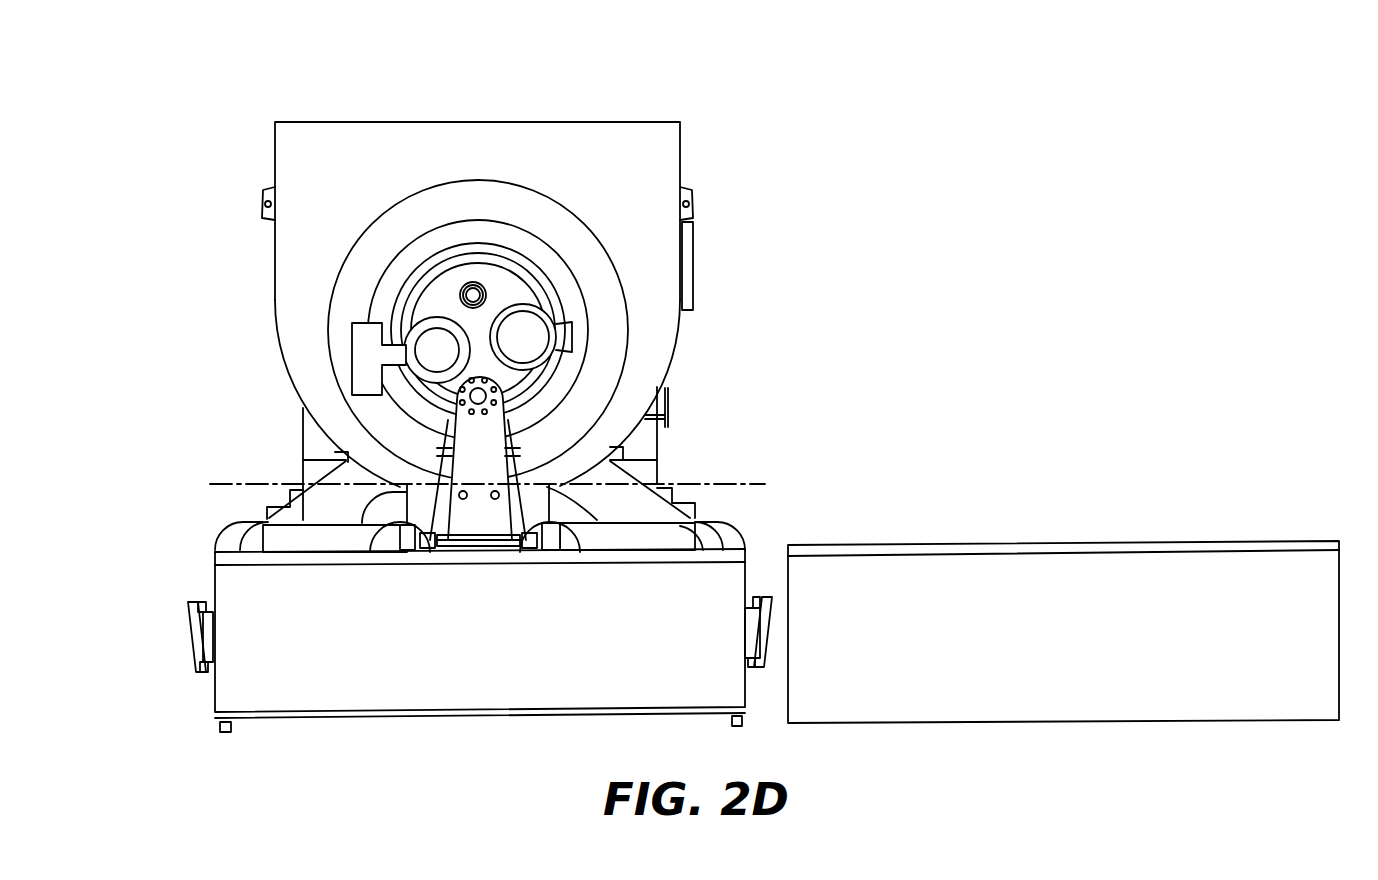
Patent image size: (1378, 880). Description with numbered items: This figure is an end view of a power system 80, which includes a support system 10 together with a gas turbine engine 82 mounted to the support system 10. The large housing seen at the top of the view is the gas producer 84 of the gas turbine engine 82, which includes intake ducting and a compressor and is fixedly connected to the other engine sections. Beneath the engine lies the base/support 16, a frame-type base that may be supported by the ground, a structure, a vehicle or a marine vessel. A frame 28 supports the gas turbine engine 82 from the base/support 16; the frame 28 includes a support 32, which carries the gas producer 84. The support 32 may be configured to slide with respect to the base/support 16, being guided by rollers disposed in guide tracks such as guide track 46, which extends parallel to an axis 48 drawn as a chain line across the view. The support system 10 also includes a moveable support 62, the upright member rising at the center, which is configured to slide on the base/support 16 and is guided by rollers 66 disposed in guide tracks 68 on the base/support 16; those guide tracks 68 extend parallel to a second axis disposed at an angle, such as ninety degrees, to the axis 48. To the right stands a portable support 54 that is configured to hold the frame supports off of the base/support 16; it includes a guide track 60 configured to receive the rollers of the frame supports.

The support system 10 is at (438, 728).
The base/support 16 is at (365, 690).
The frame 28 is at (237, 539).
The support 32 is at (317, 542).
The guide track 46 is at (747, 548).
The axis 48 is at (723, 482).
The portable support 54 is at (1318, 698).
The guide track 60 is at (1270, 545).
The moveable support 62 is at (468, 427).
The rollers 66 is at (400, 528).
The guide tracks 68 is at (425, 548).
The power system 80 is at (775, 126).
The gas turbine engine 82 is at (438, 102).
The gas producer 84 is at (587, 122).